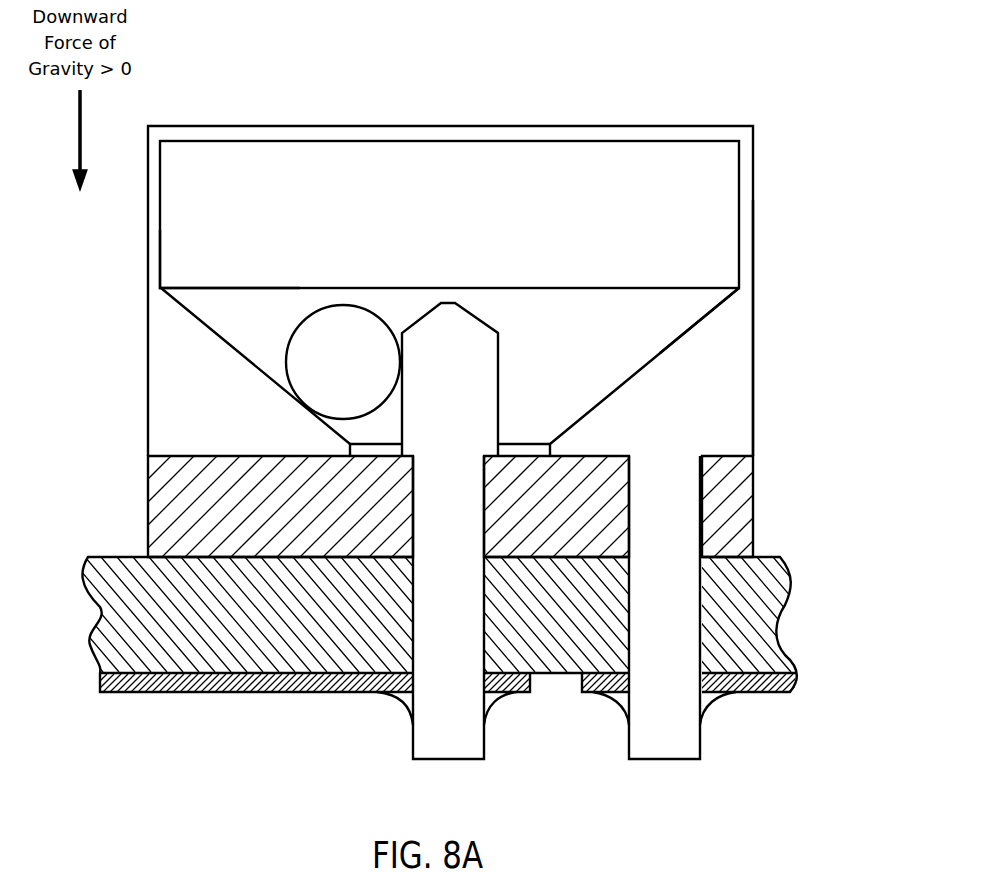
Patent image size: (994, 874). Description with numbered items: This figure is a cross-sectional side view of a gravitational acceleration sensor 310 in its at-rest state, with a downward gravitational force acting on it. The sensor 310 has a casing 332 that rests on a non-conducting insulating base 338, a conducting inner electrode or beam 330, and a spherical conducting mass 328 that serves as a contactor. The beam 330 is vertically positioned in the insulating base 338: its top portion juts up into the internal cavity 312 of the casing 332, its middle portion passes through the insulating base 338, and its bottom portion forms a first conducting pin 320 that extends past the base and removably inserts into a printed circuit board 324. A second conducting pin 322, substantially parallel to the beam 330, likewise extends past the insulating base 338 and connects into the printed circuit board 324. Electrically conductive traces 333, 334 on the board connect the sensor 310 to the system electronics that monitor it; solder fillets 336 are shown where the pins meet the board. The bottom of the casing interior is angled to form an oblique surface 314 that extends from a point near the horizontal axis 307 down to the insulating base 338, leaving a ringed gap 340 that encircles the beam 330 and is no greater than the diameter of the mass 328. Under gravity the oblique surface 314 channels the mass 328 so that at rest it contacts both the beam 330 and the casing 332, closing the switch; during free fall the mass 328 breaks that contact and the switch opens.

The horizontal axis 307 is at (200, 290).
The sensor 310 is at (736, 112).
The internal cavity 312 is at (219, 173).
The oblique surface 314 is at (228, 340).
The first conducting pin 320 is at (452, 748).
The second conducting pin 322 is at (667, 748).
The printed circuit board 324 is at (198, 642).
The mass 328 is at (356, 345).
The beam 330 is at (458, 348).
The casing 332 is at (716, 345).
The electrically conductive trace 333 is at (518, 696).
The electrically conductive trace 334 is at (600, 696).
The solder fillet 336 is at (405, 698).
The insulating base 338 is at (175, 503).
The gap 340 is at (370, 428).